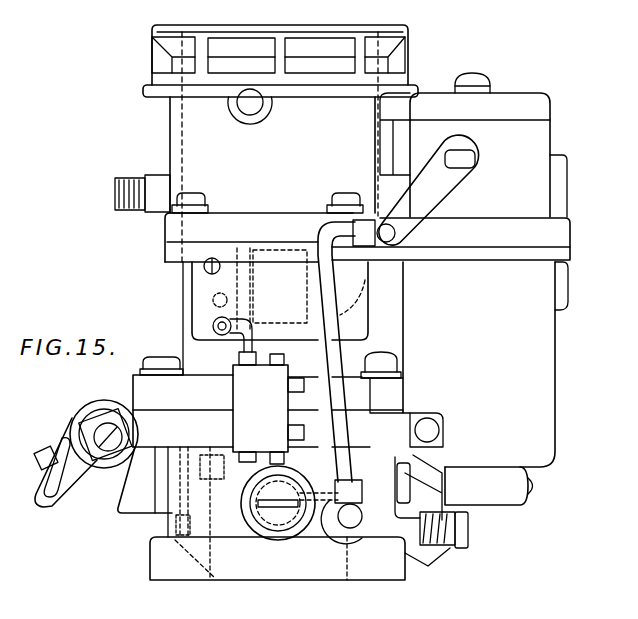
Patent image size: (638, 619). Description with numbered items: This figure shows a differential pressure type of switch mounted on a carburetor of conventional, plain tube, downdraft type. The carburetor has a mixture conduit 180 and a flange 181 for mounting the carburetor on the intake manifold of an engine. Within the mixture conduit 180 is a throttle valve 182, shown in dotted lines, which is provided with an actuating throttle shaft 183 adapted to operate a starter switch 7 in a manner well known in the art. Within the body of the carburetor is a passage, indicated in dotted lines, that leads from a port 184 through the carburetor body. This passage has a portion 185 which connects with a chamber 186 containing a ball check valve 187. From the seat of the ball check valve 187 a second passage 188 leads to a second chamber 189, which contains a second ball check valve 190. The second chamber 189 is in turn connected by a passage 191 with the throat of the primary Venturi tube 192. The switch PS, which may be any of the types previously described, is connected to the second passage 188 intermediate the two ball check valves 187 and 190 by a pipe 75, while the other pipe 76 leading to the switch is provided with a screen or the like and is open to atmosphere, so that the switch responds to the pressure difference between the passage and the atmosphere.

The starter switch 7 is at (106, 399).
The pipe 75 is at (246, 338).
The pipe 76 is at (250, 452).
The mixture conduit 180 is at (190, 26).
The flange 181 is at (402, 572).
The throttle valve 182 is at (236, 540).
The throttle shaft 183 is at (293, 547).
The port 184 is at (220, 578).
The passage portion 185 is at (178, 518).
The chamber 186 is at (185, 468).
The ball check valve 187 is at (216, 475).
The second passage 188 is at (220, 388).
The second chamber 189 is at (212, 288).
The second ball check valve 190 is at (212, 311).
The passage 191 is at (250, 276).
The primary Venturi tube 192 is at (283, 251).